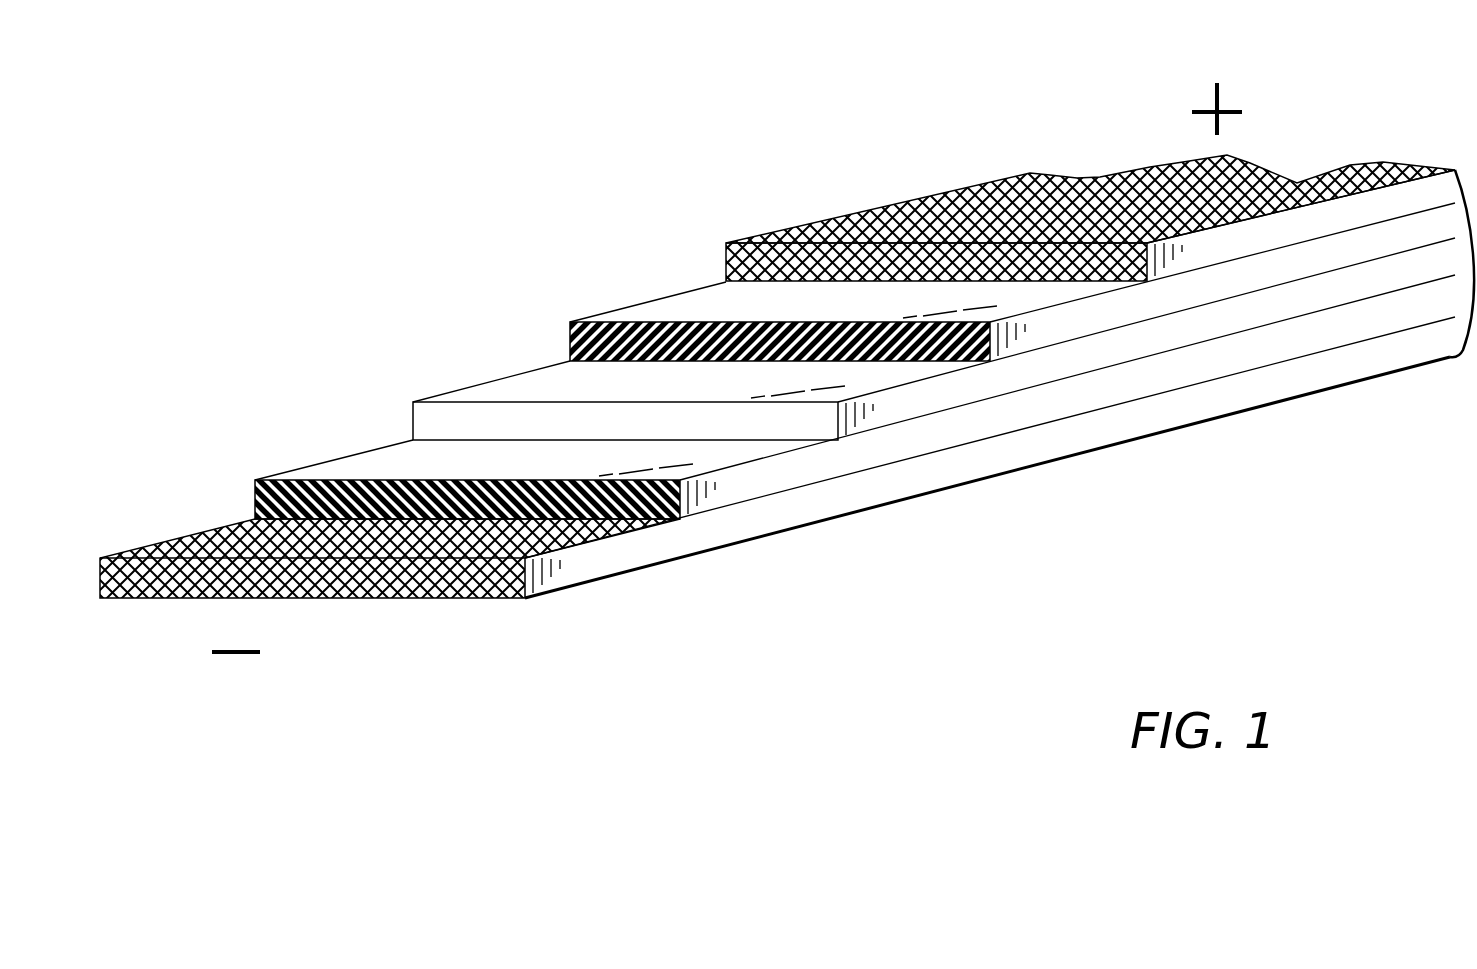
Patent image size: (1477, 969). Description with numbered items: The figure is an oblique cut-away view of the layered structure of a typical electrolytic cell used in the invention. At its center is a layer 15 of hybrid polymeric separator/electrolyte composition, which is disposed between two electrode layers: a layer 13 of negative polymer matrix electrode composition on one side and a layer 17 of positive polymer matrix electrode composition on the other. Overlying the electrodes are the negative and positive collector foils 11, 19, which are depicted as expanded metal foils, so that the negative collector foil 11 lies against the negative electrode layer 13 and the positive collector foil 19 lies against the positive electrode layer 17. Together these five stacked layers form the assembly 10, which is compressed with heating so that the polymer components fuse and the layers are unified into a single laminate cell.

The assembly 10 is at (1195, 490).
The negative collector foil 11 is at (247, 518).
The negative polymer matrix electrode composition layer 13 is at (413, 465).
The hybrid polymeric separator/electrolyte composition layer 15 is at (555, 387).
The positive polymer matrix electrode composition layer 17 is at (703, 298).
The positive collector foil 19 is at (970, 193).